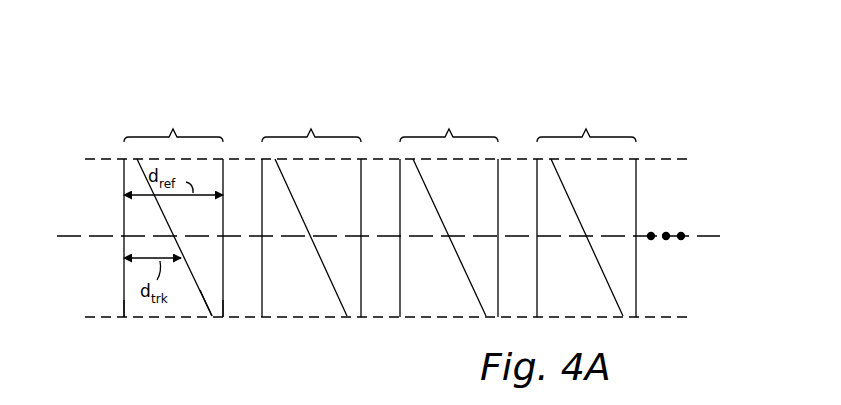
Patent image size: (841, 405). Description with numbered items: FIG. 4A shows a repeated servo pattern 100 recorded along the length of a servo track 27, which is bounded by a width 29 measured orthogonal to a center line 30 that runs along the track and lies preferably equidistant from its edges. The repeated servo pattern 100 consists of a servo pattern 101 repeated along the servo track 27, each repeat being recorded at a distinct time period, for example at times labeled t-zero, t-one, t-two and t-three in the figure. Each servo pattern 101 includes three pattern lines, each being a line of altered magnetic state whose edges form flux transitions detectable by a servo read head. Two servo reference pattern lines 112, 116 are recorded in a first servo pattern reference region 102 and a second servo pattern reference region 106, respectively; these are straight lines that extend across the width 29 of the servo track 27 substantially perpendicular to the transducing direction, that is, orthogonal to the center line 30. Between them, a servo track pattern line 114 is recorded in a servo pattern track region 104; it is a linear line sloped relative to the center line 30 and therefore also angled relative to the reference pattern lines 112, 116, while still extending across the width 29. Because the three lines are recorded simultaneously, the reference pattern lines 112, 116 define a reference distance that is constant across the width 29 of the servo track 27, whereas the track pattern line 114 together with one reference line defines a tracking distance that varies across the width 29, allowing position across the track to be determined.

The repeated servo pattern 100 is at (468, 76).
The servo pattern 101 is at (120, 121).
The first servo pattern reference region 102 is at (124, 330).
The servo pattern track region 104 is at (182, 316).
The second servo pattern reference region 106 is at (223, 330).
The servo reference pattern line 112 is at (123, 209).
The servo track pattern line 114 is at (166, 220).
The servo reference pattern line 116 is at (223, 292).
The servo track 27 is at (698, 291).
The width 29 is at (669, 156).
The center line 30 is at (60, 237).